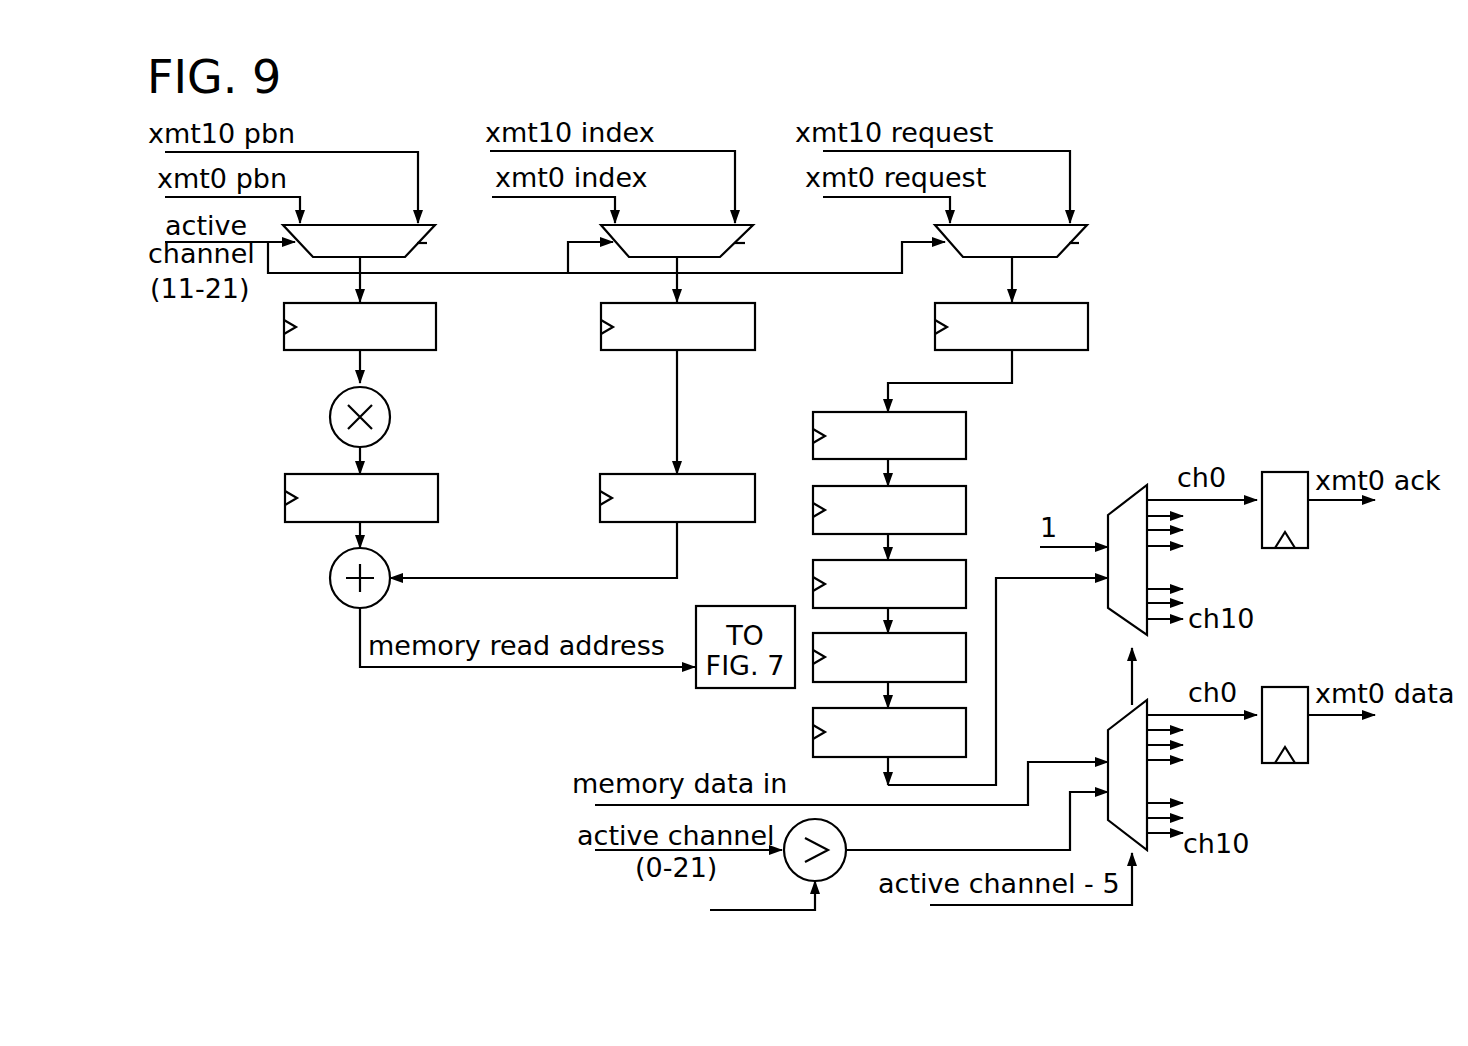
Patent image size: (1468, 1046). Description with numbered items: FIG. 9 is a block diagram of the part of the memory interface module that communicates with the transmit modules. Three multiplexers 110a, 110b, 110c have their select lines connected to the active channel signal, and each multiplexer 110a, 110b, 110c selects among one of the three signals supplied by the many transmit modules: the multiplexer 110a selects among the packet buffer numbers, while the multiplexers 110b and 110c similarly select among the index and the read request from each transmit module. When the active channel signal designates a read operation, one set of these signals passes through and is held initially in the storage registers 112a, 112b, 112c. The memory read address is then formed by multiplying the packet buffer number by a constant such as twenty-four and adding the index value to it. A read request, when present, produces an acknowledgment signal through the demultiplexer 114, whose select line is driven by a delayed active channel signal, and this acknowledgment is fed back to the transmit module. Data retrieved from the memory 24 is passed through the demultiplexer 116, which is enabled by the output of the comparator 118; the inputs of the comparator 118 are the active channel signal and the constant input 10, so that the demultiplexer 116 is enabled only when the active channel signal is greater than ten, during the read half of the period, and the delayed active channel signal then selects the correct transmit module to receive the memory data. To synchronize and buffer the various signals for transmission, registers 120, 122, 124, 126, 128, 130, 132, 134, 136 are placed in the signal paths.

The multiplexer 110a is at (422, 244).
The multiplexer 110b is at (740, 244).
The multiplexer 110c is at (1074, 244).
The storage register 112a is at (436, 331).
The storage register 112b is at (755, 331).
The storage register 112c is at (1088, 331).
The memory 24 is at (390, 417).
The register 120 is at (438, 498).
The register 122 is at (716, 474).
The register 124 is at (966, 437).
The register 126 is at (966, 505).
The register 128 is at (966, 578).
The register 130 is at (966, 654).
The register 132 is at (966, 730).
The demultiplexer 114 is at (1118, 508).
The demultiplexer 116 is at (1122, 722).
The comparator 118 is at (848, 838).
The register 134 is at (1280, 472).
The register 136 is at (1290, 687).
The constant input 10 is at (762, 892).